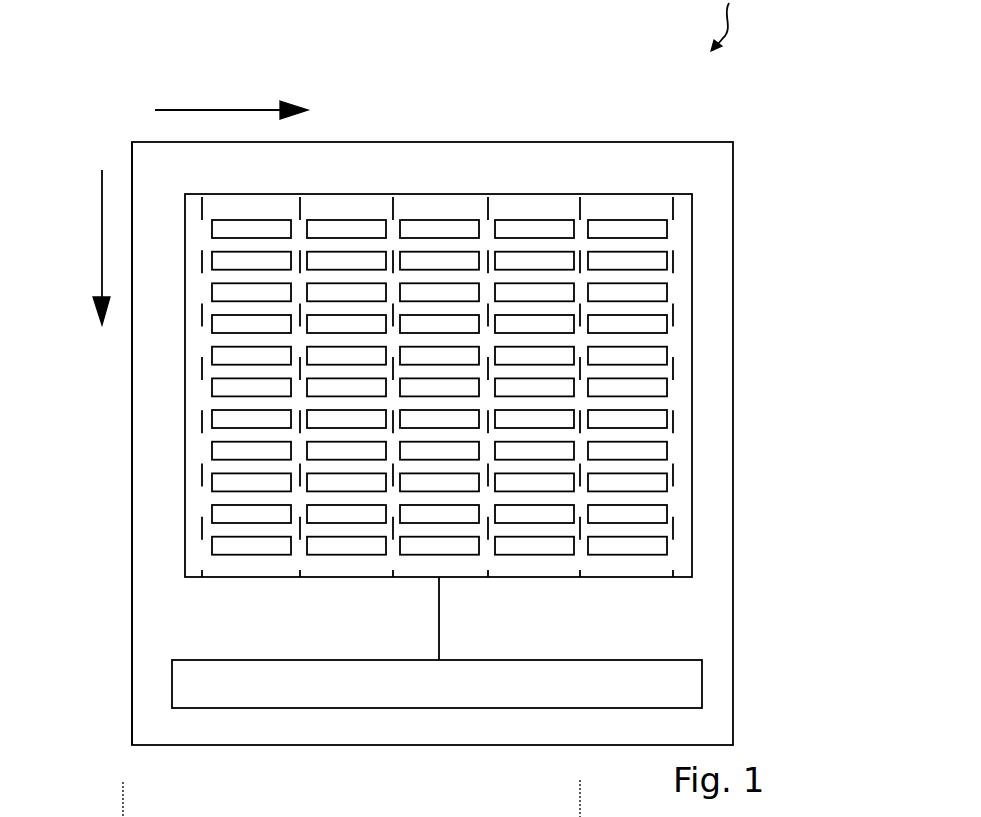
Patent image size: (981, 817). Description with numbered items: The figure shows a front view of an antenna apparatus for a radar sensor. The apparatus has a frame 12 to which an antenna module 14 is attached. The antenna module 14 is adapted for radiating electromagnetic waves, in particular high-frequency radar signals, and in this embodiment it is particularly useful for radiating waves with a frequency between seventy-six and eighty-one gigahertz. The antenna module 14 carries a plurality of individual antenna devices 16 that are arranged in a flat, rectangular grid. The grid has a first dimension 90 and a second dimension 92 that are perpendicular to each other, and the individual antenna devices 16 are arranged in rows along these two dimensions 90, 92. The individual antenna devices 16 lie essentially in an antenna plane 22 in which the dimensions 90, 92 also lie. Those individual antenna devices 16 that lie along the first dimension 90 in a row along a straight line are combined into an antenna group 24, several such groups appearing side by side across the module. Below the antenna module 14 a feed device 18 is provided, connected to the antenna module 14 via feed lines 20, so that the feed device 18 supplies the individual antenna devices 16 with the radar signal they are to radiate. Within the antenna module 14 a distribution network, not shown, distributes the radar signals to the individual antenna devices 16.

The frame 12 is at (720, 238).
The antenna module 14 is at (688, 350).
The individual antenna devices 16 is at (540, 232).
The feed device 18 is at (688, 680).
The feed lines 20 is at (439, 622).
The antenna plane 22 is at (147, 439).
The antenna group 24 is at (443, 200).
The first dimension 90 is at (100, 232).
The second dimension 92 is at (222, 110).